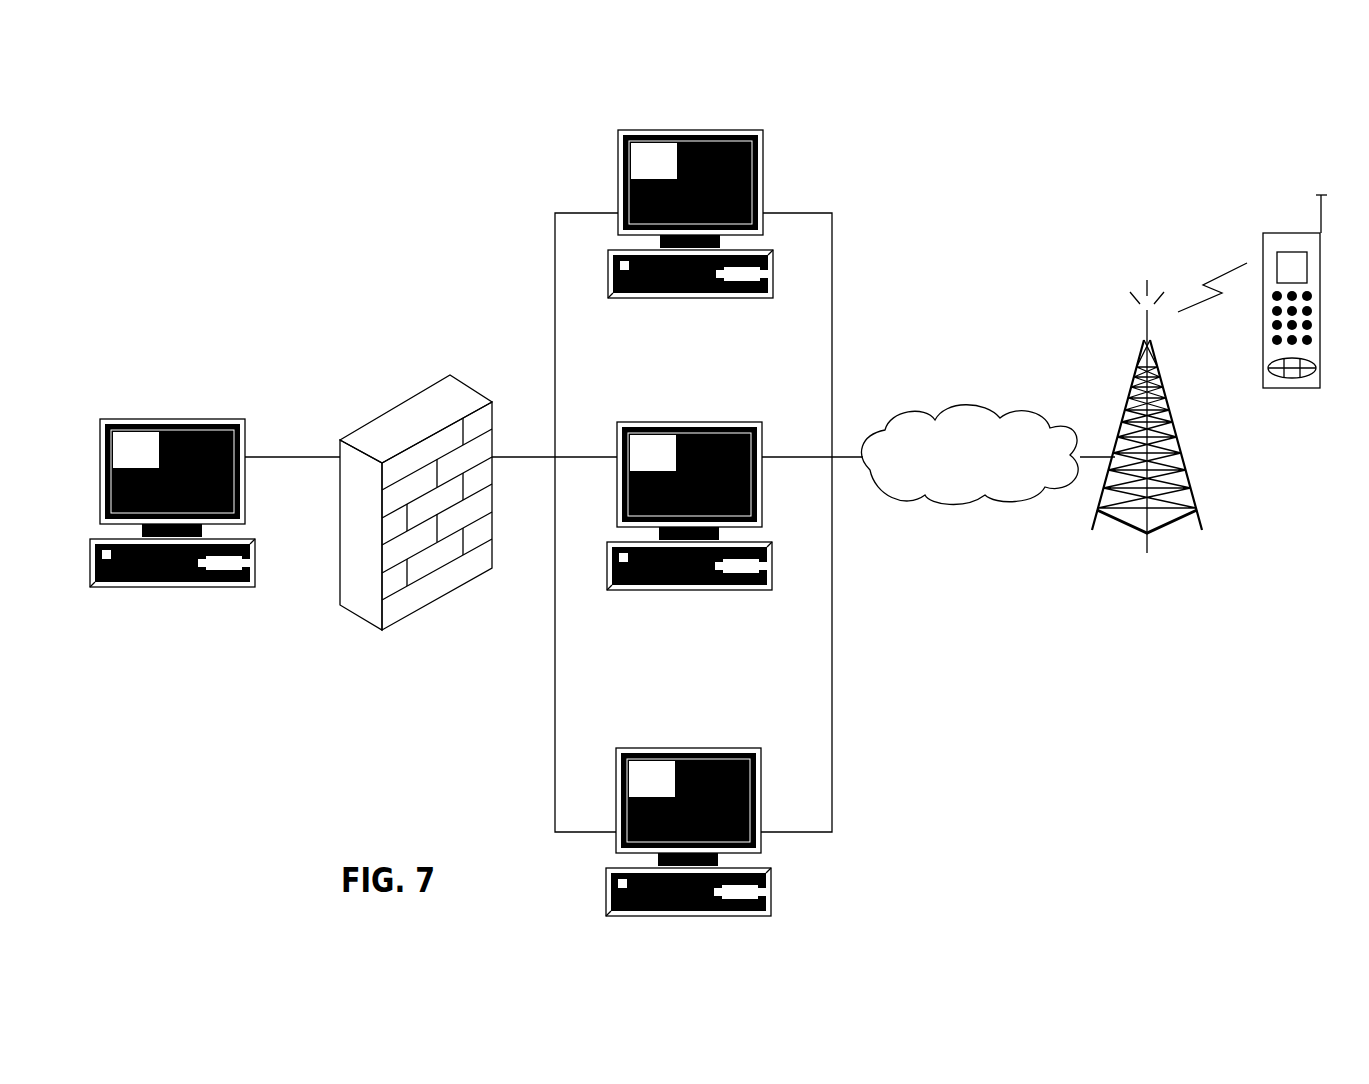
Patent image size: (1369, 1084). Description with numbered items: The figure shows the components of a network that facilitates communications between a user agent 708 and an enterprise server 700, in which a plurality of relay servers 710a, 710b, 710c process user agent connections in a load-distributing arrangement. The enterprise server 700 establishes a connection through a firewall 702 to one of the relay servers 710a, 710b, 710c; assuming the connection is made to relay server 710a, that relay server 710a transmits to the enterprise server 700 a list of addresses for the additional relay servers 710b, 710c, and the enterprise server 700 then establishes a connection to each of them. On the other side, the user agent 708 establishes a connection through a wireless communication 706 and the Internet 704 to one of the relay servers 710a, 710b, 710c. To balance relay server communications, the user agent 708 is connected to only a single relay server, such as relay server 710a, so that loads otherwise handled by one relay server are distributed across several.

The enterprise server 700 is at (210, 588).
The firewall 702 is at (415, 598).
The Internet 704 is at (968, 500).
The wireless communication 706 is at (1147, 553).
The user agent 708 is at (1290, 388).
The relay server 710a is at (728, 298).
The relay server 710b is at (727, 590).
The relay server 710c is at (770, 900).